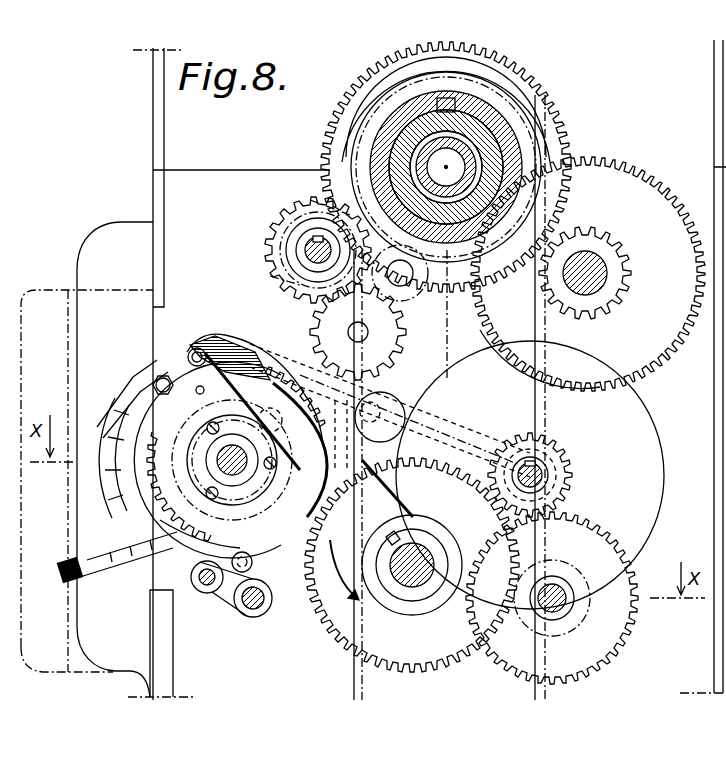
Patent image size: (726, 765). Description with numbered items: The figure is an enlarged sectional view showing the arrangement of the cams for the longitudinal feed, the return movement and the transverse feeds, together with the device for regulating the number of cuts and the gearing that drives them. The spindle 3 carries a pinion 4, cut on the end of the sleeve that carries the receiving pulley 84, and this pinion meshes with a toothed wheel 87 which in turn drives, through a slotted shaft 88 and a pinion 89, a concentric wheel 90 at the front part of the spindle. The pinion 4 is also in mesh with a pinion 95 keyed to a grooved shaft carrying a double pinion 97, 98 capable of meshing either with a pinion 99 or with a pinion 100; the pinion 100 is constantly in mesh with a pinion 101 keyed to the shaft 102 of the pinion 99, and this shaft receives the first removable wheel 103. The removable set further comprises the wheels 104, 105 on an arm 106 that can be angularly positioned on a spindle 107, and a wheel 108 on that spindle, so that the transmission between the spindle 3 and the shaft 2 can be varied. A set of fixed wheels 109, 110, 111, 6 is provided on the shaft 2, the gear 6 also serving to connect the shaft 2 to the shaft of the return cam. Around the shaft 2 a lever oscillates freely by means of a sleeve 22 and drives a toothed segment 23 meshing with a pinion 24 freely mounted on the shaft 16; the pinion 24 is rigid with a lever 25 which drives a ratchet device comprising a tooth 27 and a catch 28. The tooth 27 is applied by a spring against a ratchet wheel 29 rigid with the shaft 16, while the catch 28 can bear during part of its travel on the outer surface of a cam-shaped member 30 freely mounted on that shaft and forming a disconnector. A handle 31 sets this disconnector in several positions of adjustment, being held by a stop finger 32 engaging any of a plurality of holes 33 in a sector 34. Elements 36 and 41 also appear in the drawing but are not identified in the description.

The shaft 2 is at (412, 590).
The spindle 3 is at (475, 140).
The pinion 4 is at (527, 170).
The gear 6 is at (462, 665).
The shaft 16 is at (232, 460).
The sleeve 22 is at (398, 598).
The toothed segment 23 is at (340, 525).
The pinion 24 is at (230, 460).
The lever 25 is at (165, 410).
The tooth 27 is at (228, 338).
The catch 28 is at (245, 345).
The ratchet wheel 29 is at (198, 352).
The cam-shaped member 30 is at (197, 518).
The handle 31 is at (140, 548).
The stop finger 32 is at (58, 547).
The holes 33 is at (108, 432).
The sector 34 is at (118, 412).
The roller 36 is at (260, 606).
The roller 41 is at (205, 580).
The receiving pulley 84 is at (500, 98).
The toothed wheel 87 is at (660, 182).
The slotted shaft 88 is at (576, 260).
The pinion 89 is at (630, 262).
The concentric wheel 90 is at (568, 138).
The pinion 95 is at (327, 160).
The pinion 97 is at (474, 312).
The pinion 98 is at (484, 288).
The pinion 99 is at (288, 198).
The pinion 100 is at (400, 340).
The pinion 101 is at (316, 210).
The shaft 102 is at (313, 243).
The wheel 103 is at (296, 248).
The wheel 104 is at (273, 277).
The wheel 105 is at (392, 393).
The arm 106 is at (390, 410).
The spindle 107 is at (548, 458).
The wheel 108 is at (662, 512).
The fixed wheel 109 is at (570, 488).
The fixed wheel 110 is at (632, 626).
The fixed wheel 111 is at (583, 614).